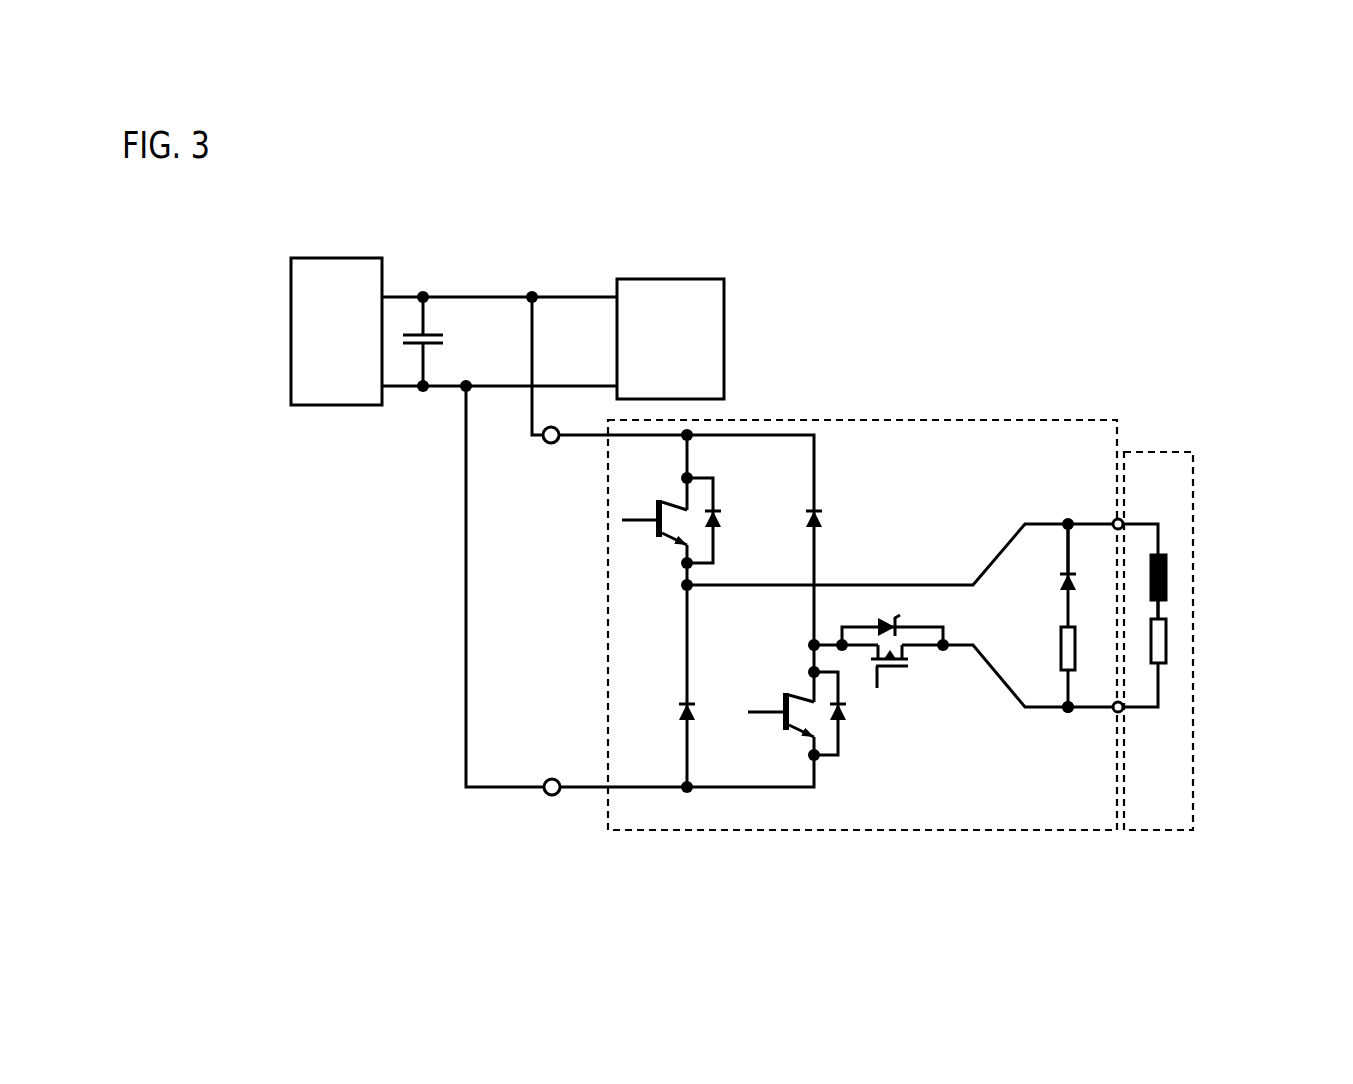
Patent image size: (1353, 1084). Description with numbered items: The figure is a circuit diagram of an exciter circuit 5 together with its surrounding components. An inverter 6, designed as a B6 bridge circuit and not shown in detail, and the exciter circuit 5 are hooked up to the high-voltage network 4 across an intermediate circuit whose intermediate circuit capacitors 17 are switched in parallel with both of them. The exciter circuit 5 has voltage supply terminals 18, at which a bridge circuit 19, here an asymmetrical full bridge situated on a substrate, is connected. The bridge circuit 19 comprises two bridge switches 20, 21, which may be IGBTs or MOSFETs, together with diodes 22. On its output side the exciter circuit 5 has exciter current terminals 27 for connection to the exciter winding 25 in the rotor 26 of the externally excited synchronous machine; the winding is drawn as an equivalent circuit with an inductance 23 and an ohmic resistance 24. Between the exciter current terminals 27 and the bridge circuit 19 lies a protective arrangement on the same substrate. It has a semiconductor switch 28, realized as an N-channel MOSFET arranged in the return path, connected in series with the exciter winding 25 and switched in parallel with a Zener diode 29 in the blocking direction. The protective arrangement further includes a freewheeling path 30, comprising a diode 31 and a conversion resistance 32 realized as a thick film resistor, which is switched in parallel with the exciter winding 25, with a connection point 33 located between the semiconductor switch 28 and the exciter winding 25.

The high-voltage network 4 is at (352, 406).
The exciter circuit 5 is at (1049, 450).
The inverter 6 is at (674, 278).
The intermediate circuit capacitors 17 is at (447, 341).
The voltage supply terminals 18 is at (548, 444).
The bridge circuit 19 is at (824, 473).
The bridge switch 20 is at (647, 525).
The bridge switch 21 is at (793, 736).
The diodes 22 is at (736, 505).
The inductance 23 is at (1166, 580).
The ohmic resistance 24 is at (1166, 641).
The exciter winding 25 is at (1165, 603).
The rotor 26 is at (1193, 800).
The exciter current terminals 27 is at (1116, 521).
The semiconductor switch 28 is at (898, 675).
The Zener diode 29 is at (909, 619).
The freewheeling path 30 is at (1066, 558).
The diode 31 is at (1047, 582).
The conversion resistance 32 is at (1047, 641).
The connection point 33 is at (1066, 710).